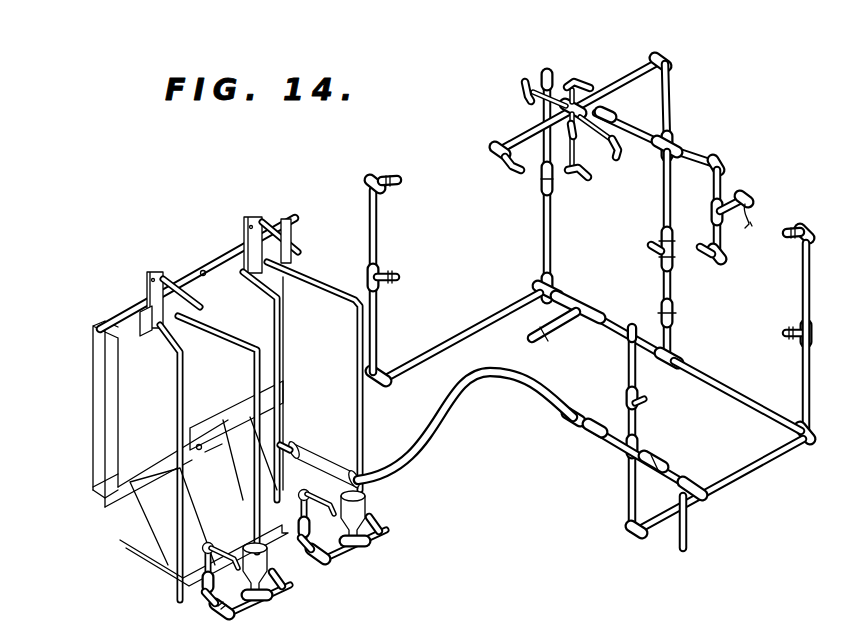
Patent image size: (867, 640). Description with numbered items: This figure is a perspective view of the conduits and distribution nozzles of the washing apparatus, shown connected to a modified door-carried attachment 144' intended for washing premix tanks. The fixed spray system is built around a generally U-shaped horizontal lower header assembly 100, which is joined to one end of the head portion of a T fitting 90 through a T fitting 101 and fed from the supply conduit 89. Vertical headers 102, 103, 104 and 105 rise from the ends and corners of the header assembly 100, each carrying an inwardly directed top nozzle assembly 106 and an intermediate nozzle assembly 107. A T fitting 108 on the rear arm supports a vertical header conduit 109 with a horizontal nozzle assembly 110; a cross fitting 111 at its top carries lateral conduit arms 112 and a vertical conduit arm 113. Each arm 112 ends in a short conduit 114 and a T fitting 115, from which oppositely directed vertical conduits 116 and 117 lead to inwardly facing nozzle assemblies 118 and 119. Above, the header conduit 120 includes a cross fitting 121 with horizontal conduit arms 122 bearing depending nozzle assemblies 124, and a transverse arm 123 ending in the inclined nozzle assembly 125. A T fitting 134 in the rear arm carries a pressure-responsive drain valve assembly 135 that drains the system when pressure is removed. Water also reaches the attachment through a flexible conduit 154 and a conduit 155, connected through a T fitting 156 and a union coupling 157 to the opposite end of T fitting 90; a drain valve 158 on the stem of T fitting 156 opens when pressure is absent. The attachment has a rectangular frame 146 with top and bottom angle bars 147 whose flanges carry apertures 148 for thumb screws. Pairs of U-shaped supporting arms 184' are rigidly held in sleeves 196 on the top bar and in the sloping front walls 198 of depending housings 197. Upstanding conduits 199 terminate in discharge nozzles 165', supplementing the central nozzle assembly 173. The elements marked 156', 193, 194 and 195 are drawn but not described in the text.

The supply conduit 89 is at (689, 531).
The T fitting 90 is at (688, 480).
The lower header assembly 100 is at (742, 393).
The T fitting 101 is at (720, 510).
The vertical header 102 is at (377, 247).
The vertical header 103 is at (549, 243).
The vertical header 104 is at (803, 378).
The vertical header 105 is at (628, 490).
The top nozzle assembly 106 is at (386, 177).
The intermediate nozzle assembly 107 is at (396, 283).
The T fitting 108 is at (690, 353).
The vertical header conduit 109 is at (661, 198).
The horizontal nozzle assembly 110 is at (658, 255).
The cross fitting 111 is at (678, 143).
The conduit arm 112 is at (632, 130).
The vertical conduit arm 113 is at (670, 100).
The short conduit 114 is at (747, 220).
The T fitting 115 is at (713, 225).
The vertical conduit 116 is at (740, 194).
The vertical conduit 117 is at (722, 255).
The nozzle assembly 118 is at (720, 168).
The nozzle assembly 119 is at (706, 254).
The header conduit 120 is at (612, 86).
The cross fitting 121 is at (560, 107).
The horizontal conduit arm 122 is at (562, 93).
The horizontal conduit arm 123 is at (491, 147).
The nozzle assembly 124 is at (518, 98).
The nozzle assembly 125 is at (520, 174).
The T fitting 134 is at (590, 298).
The drain valve assembly 135 is at (564, 326).
The door-carried attachment 144' is at (94, 284).
The frame 146 is at (97, 410).
The angle bar 147 is at (291, 222).
The aperture 148 is at (203, 268).
The flexible conduit 154 is at (442, 437).
The conduit 155 is at (572, 432).
The T fitting 156 is at (440, 463).
The pump outlet pipe 156' is at (279, 585).
The union coupling 157 is at (655, 453).
The drain valve 158 is at (616, 414).
The discharge nozzle 165' is at (252, 547).
The nozzle assembly 173 is at (272, 590).
The U-shaped supporting arm 184' is at (260, 416).
The bracket 193 is at (250, 218).
The hook bar 194 is at (273, 228).
The bracket 195 is at (158, 283).
The sleeve 196 is at (147, 334).
The depending housing 197 is at (110, 528).
The front wall 198 is at (150, 515).
The upstanding conduit 199 is at (222, 553).